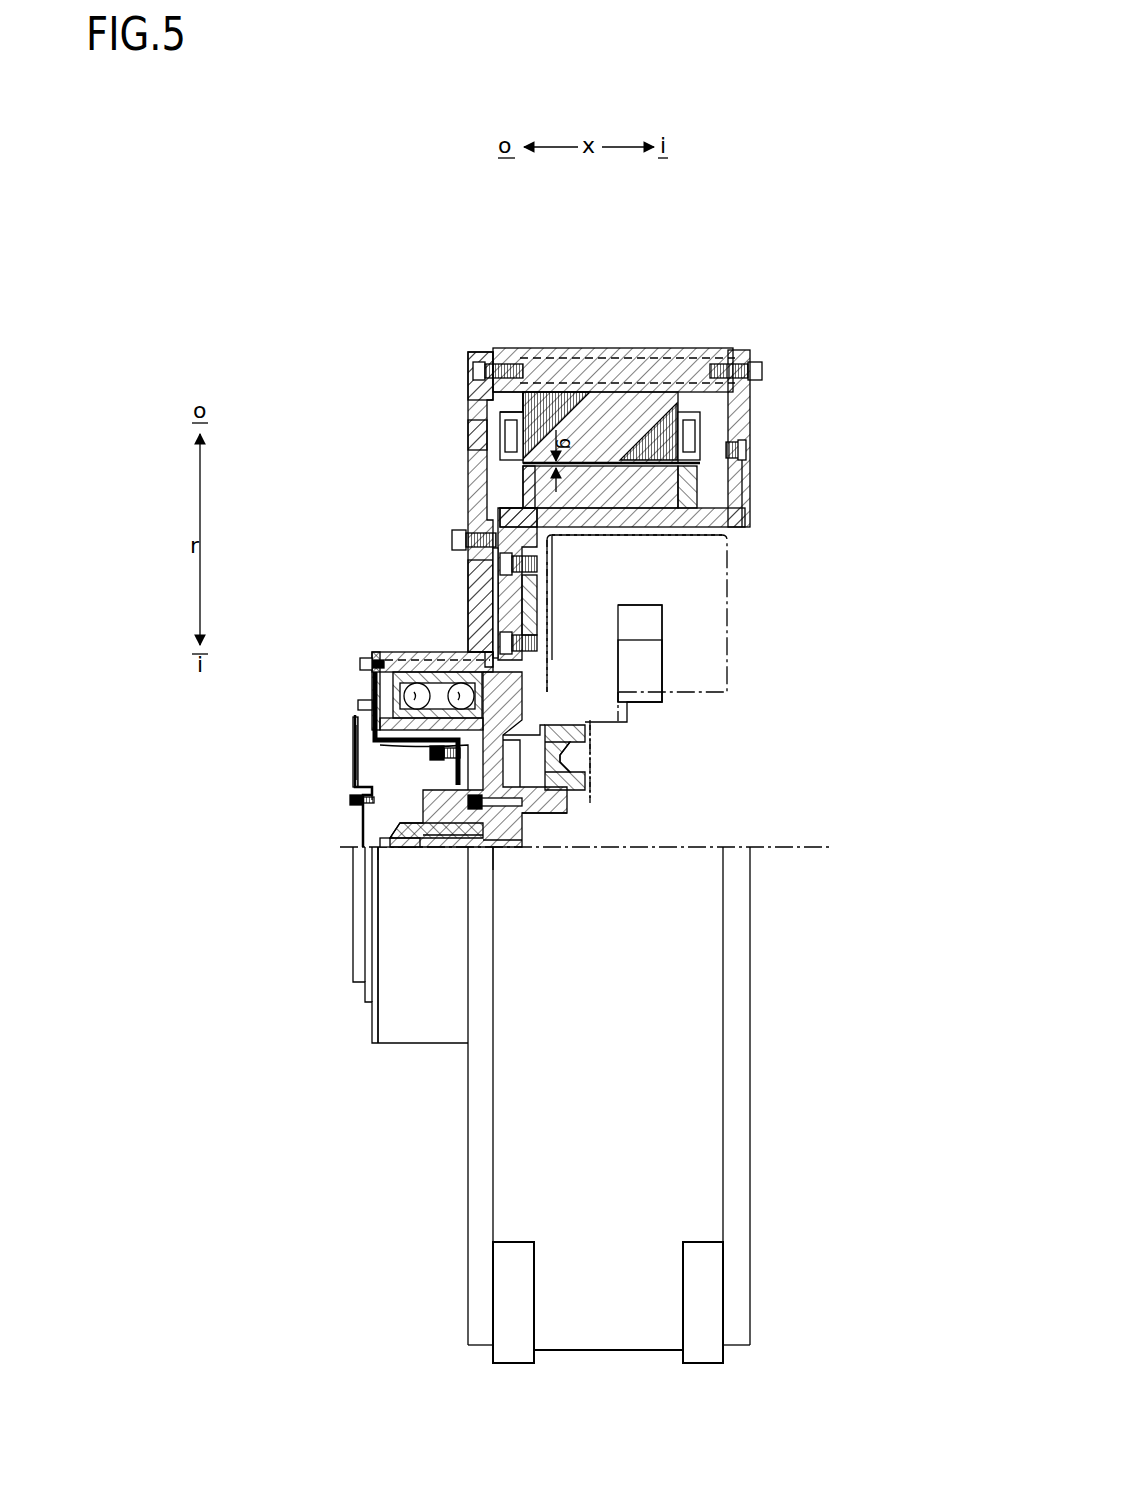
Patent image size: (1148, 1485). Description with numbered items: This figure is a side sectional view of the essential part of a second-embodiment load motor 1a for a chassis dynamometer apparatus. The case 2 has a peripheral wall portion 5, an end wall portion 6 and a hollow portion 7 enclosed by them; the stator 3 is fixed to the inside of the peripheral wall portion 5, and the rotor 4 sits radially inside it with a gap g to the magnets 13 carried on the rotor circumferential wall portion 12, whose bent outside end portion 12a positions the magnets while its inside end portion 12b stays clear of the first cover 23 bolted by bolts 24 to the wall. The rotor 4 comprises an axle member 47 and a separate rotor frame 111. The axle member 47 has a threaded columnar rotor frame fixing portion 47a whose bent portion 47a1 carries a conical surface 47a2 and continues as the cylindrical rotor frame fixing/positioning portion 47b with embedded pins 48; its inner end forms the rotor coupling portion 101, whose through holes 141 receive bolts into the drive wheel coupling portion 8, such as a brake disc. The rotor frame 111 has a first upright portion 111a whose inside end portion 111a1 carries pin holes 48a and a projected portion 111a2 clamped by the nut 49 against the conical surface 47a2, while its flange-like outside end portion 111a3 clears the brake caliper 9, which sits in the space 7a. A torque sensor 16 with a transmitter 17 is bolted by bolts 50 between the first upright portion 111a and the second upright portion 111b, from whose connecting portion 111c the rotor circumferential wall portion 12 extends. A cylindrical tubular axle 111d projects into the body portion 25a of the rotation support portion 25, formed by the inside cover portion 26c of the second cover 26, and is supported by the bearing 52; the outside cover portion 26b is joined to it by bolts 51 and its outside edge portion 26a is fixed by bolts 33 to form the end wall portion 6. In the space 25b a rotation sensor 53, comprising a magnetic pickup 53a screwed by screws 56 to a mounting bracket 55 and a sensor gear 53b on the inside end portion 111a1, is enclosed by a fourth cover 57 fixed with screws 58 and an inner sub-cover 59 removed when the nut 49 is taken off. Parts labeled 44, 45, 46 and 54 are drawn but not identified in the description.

The load motor 1a is at (848, 328).
The case 2 is at (620, 335).
The stator 3 is at (643, 395).
The rotor 4 is at (547, 607).
The peripheral wall portion 5 is at (566, 348).
The end wall portion 6 is at (440, 565).
The hollow portion 7 is at (541, 590).
The space 7a is at (541, 618).
The drive wheel coupling portion 8 is at (655, 678).
The brake caliper 9 is at (730, 666).
The rotor circumferential wall portion 12 is at (583, 512).
The outside end portion 12a is at (515, 512).
The inside end portion 12b is at (745, 522).
The magnets 13 is at (520, 482).
The torque sensor 16 is at (478, 562).
The transmitter 17 is at (494, 600).
The first cover 23 is at (740, 450).
The bolts 24 is at (762, 370).
The rotation support portion 25 is at (350, 1025).
The body portion 25a is at (385, 658).
The space 25b is at (357, 813).
The second cover 26 is at (464, 432).
The outside edge portion 26a is at (478, 352).
The outside cover portion 26b is at (470, 432).
The inside cover portion 26c is at (478, 595).
The bolts 33 is at (466, 368).
The tire 44 is at (510, 1302).
The wheel rim 45 is at (508, 1245).
The rim flange 46 is at (508, 1365).
The axle member 47 is at (510, 857).
The rotor frame fixing portion 47a is at (430, 830).
The bent portion 47a1 is at (505, 846).
The conical surface 47a2 is at (455, 840).
The rotor frame fixing/positioning portion 47b is at (560, 820).
The pins 48 is at (525, 808).
The pin holes 48a is at (495, 852).
The nut 49 is at (385, 826).
The bolts 50 is at (538, 562).
The bolts 51 is at (452, 540).
The bearing 52 is at (432, 668).
The rotation sensor 53 is at (420, 770).
The magnetic pickup 53a is at (470, 795).
The sensor gear 53b is at (520, 745).
The bolt 54 is at (375, 667).
The mounting bracket 55 is at (368, 735).
The screws 56 is at (436, 752).
The fourth cover 57 is at (350, 962).
The screws 58 is at (360, 707).
The sub-cover 59 is at (356, 843).
The rotor coupling portion 101 is at (577, 740).
The rotor frame 111 is at (532, 695).
The first upright portion 111a is at (548, 666).
The inside end portion 111a1 is at (392, 798).
The projected portion 111a2 is at (398, 832).
The outside end portion 111a3 is at (548, 672).
The second upright portion 111b is at (547, 553).
The connecting portion 111c is at (548, 538).
The cylindrical tubular axle 111d is at (365, 752).
The through holes 141 is at (575, 760).